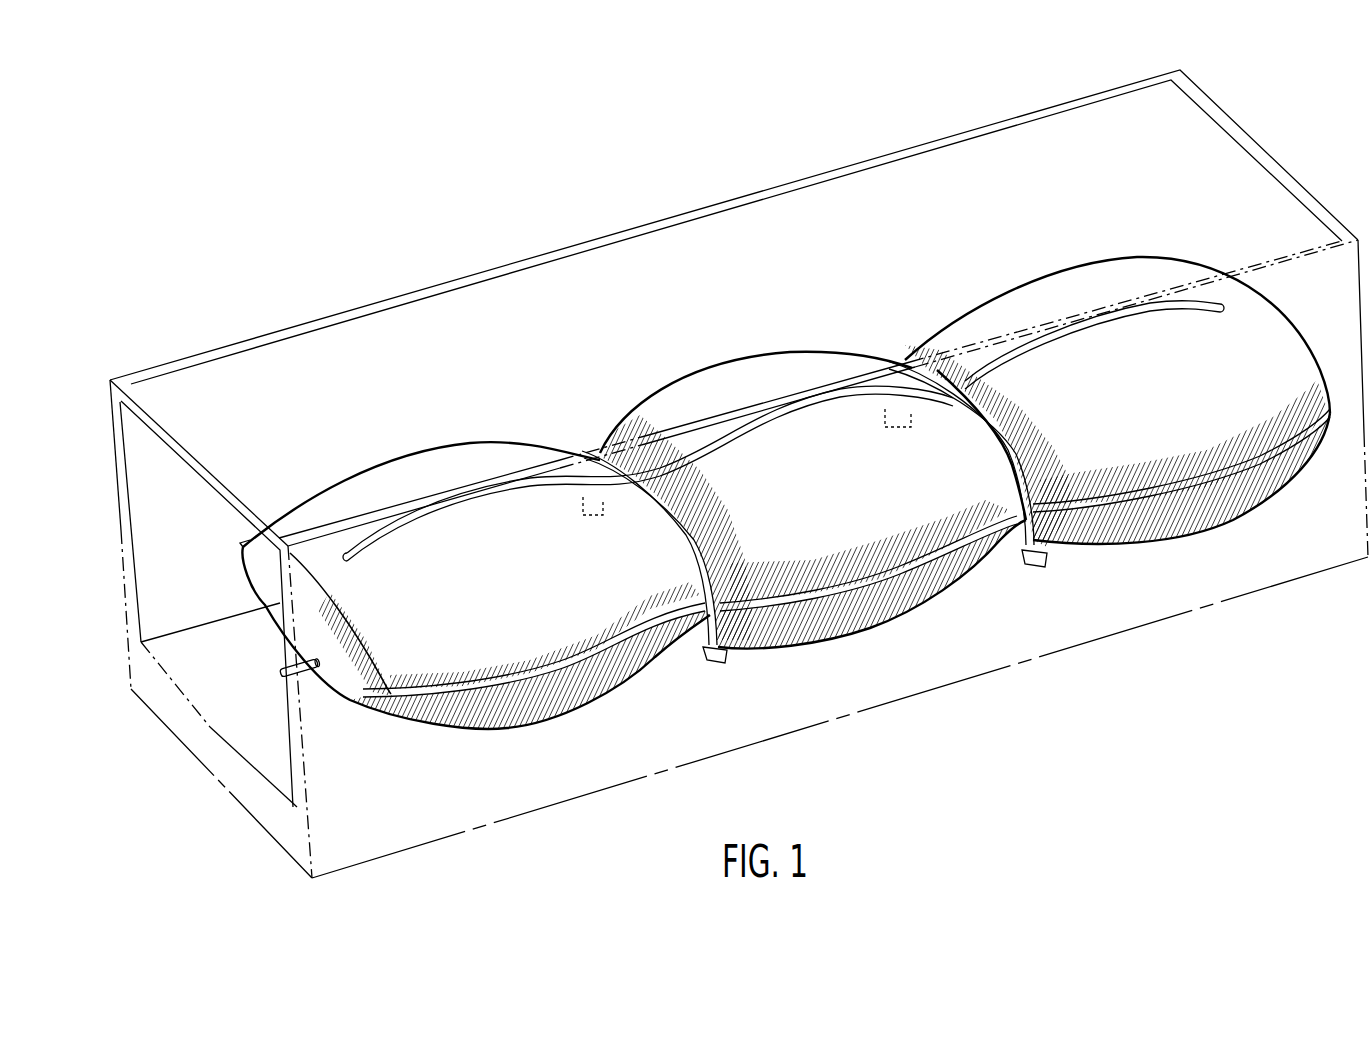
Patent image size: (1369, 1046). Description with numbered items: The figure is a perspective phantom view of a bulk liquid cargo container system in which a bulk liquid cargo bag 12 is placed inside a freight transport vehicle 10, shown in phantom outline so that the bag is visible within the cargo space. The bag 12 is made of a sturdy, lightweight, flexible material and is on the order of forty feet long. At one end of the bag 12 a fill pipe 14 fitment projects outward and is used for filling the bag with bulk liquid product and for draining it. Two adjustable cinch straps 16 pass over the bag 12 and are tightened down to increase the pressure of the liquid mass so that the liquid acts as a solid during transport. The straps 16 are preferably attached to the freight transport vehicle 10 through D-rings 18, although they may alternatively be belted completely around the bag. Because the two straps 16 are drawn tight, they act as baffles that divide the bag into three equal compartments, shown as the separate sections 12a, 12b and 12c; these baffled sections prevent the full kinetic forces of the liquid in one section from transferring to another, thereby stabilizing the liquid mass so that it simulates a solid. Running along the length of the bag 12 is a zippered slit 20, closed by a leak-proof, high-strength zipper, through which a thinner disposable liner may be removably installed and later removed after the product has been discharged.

The freight transport vehicle 10 is at (390, 297).
The bulk liquid cargo bag 12 is at (950, 598).
The first baffled section 12a is at (427, 445).
The second baffled section 12b is at (748, 353).
The third baffled section 12c is at (1042, 273).
The fill pipe fitment 14 is at (282, 670).
The adjustable cinch straps 16 is at (905, 355).
The D-rings 18 is at (720, 650).
The zippered slit 20 is at (1110, 323).